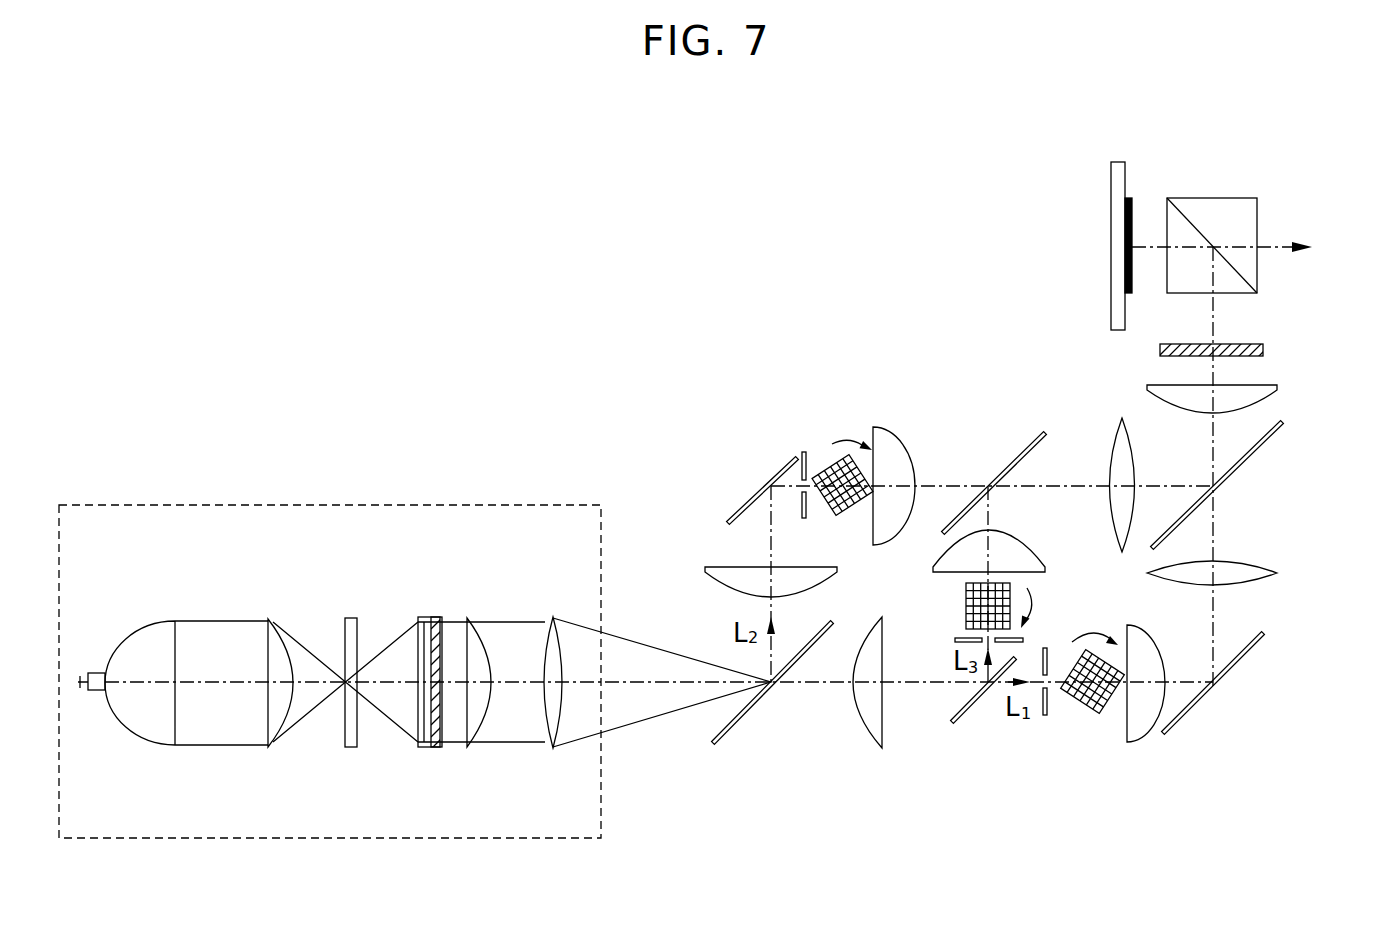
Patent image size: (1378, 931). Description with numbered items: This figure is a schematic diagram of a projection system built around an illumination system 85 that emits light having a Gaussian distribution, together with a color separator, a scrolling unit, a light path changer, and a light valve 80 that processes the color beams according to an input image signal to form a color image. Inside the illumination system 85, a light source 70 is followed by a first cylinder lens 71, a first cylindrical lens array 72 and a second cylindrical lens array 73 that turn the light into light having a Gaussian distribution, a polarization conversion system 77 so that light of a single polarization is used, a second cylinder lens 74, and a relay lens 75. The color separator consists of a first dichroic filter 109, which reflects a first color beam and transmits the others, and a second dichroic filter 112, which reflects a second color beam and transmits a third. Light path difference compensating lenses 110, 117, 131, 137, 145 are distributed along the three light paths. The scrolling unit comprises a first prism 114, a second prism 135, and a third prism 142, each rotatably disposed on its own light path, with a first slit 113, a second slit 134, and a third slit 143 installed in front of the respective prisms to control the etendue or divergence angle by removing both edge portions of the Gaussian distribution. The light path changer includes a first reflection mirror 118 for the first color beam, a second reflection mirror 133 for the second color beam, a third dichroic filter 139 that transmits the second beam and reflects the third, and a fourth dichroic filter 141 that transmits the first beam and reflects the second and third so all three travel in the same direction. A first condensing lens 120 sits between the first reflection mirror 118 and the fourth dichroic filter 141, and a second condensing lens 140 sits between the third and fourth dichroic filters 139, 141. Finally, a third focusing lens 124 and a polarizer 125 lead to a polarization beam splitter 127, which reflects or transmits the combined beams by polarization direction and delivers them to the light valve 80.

The illumination system 85 is at (331, 505).
The light source 70 is at (174, 621).
The first cylinder lens 71 is at (270, 619).
The first cylindrical lens array 72 is at (351, 618).
The second cylindrical lens array 73 is at (425, 617).
The polarization conversion system 77 is at (437, 748).
The second cylinder lens 74 is at (468, 618).
The relay lens 75 is at (553, 617).
The first dichroic filter 109 is at (750, 715).
The light path difference compensating lens 110 is at (880, 750).
The light path difference compensating lens 131 is at (712, 565).
The second reflection mirror 133 is at (757, 494).
The second slit 134 is at (800, 455).
The second prism 135 is at (838, 462).
The light path difference compensating lens 137 is at (881, 438).
The third dichroic filter 139 is at (1006, 462).
The second condensing lens 140 is at (1117, 432).
The fourth dichroic filter 141 is at (1240, 465).
The light path difference compensating lens 145 is at (1035, 565).
The third prism 142 is at (967, 602).
The third slit 143 is at (1022, 640).
The second dichroic filter 112 is at (963, 712).
The first slit 113 is at (1043, 720).
The first prism 114 is at (1097, 717).
The light path difference compensating lens 117 is at (1135, 722).
The first reflection mirror 118 is at (1203, 702).
The first condensing lens 120 is at (1280, 573).
The third focusing lens 124 is at (1277, 390).
The polarizer 125 is at (1262, 348).
The polarization beam splitter 127 is at (1212, 198).
The light valve 80 is at (1133, 227).